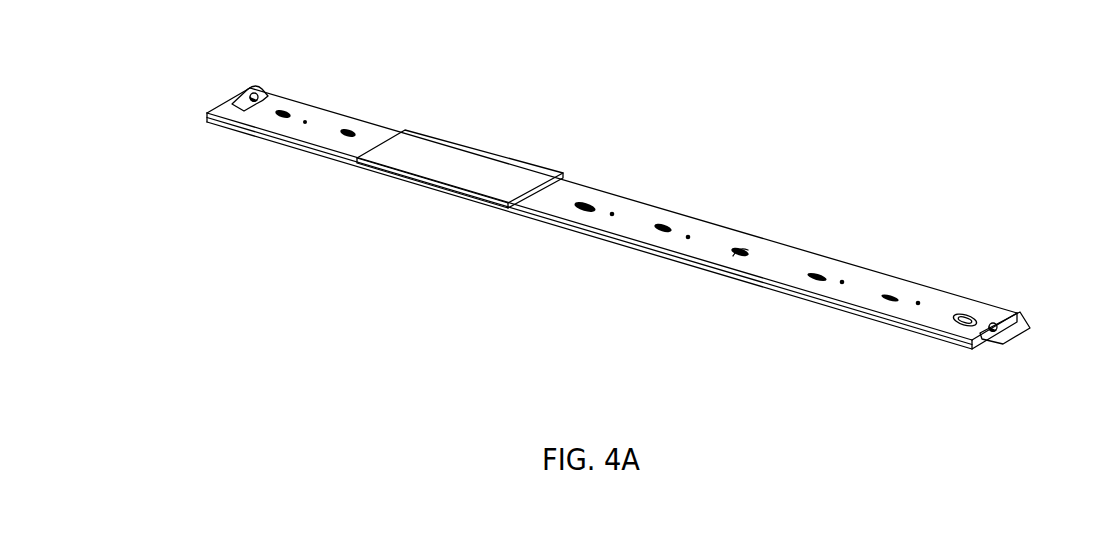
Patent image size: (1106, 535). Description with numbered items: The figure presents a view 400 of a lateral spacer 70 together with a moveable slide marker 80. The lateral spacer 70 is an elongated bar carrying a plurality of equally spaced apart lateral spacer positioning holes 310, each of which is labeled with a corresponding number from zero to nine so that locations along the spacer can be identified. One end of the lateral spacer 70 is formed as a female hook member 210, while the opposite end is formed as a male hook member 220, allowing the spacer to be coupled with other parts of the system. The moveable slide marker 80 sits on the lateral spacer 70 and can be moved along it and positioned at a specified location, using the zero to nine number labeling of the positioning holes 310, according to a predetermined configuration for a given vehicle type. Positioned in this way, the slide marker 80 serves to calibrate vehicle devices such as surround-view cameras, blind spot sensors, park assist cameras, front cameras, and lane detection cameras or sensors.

The lateral spacer 70 is at (892, 273).
The moveable slide marker 80 is at (497, 150).
The female hook member 210 is at (240, 104).
The male hook member 220 is at (1017, 340).
The lateral spacer positioning hole 310 is at (770, 260).
The view 400 is at (723, 165).